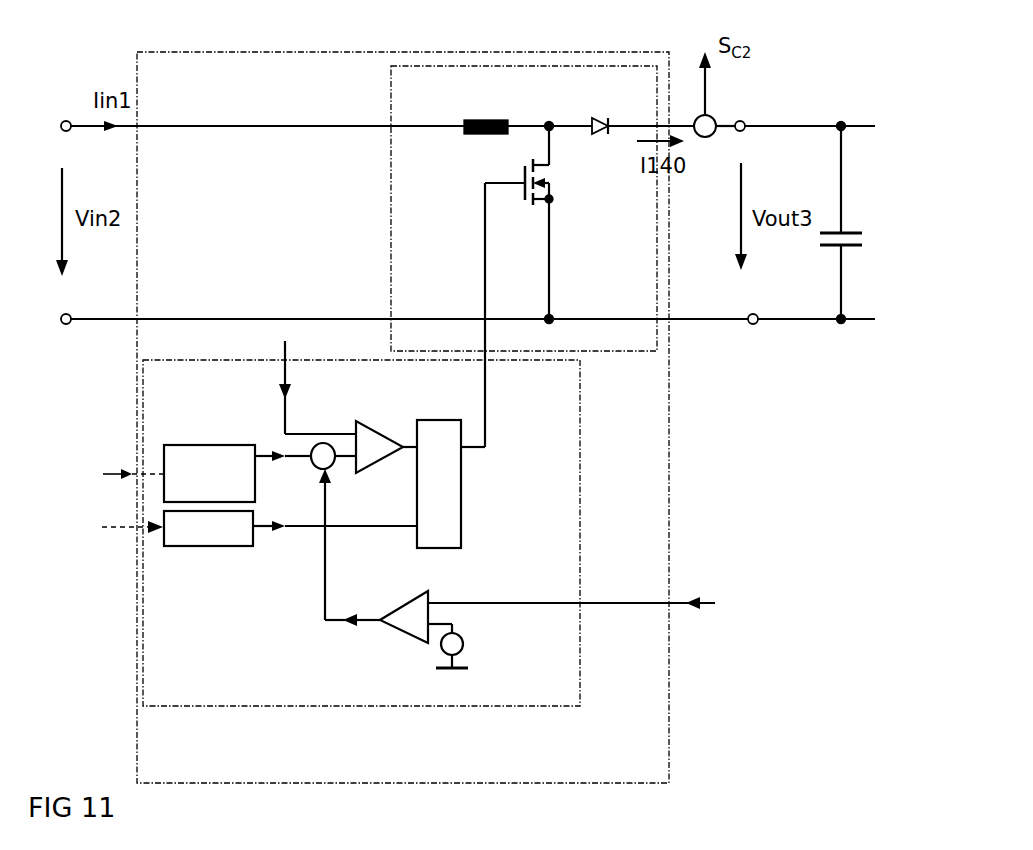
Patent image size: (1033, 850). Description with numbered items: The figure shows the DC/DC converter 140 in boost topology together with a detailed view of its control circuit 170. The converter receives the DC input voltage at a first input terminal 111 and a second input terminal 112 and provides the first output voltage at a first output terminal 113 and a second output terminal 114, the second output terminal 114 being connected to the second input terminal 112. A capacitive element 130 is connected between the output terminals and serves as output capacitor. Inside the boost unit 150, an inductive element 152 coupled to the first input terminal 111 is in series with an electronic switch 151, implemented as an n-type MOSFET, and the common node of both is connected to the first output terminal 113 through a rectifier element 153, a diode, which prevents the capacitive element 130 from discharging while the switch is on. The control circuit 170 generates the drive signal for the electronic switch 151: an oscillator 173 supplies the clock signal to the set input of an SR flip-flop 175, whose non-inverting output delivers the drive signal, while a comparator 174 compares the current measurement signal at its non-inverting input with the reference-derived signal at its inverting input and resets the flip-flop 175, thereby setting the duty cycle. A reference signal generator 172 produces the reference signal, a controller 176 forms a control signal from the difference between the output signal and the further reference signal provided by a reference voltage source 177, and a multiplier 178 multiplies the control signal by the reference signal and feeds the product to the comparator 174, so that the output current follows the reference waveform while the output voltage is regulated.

The first input terminal 111 is at (68, 119).
The second input terminal 112 is at (65, 326).
The first output terminal 113 is at (740, 118).
The second output terminal 114 is at (755, 326).
The capacitive element 130 is at (848, 230).
The DC/DC converter 140 is at (410, 49).
The boost unit 150 is at (390, 103).
The electronic switch 151 is at (561, 181).
The inductive element 152 is at (478, 121).
The rectifier element 153 is at (600, 114).
The control circuit 170 is at (460, 708).
The reference signal generator 172 is at (186, 443).
The oscillator 173 is at (205, 552).
The comparator 174 is at (371, 422).
The SR flip-flop 175 is at (437, 419).
The controller 176 is at (414, 597).
The reference voltage source 177 is at (438, 653).
The multiplier 178 is at (334, 463).